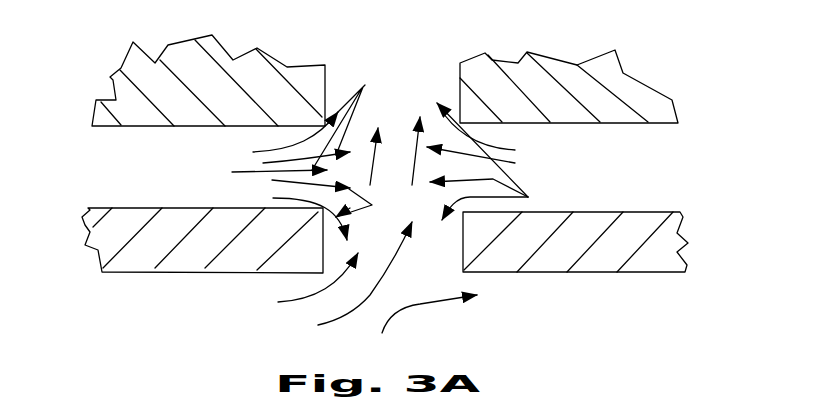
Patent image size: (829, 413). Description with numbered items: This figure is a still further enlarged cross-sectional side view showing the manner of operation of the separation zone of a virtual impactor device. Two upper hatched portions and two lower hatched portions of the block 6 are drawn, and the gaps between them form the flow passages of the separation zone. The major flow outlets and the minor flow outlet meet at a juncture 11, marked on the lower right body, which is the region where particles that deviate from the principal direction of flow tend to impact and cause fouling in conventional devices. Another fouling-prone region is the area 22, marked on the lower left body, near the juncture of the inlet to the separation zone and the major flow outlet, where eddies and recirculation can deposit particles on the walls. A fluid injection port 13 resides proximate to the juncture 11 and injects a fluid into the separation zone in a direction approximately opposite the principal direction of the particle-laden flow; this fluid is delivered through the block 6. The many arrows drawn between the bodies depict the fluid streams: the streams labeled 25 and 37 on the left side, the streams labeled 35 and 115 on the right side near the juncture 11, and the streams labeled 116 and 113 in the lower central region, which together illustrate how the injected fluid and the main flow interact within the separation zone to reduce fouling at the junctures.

The block 6 is at (220, 93).
The juncture 11 is at (464, 271).
The fluid injection port 13 is at (543, 168).
The area 22 is at (321, 268).
The flow channel gap 25 is at (222, 175).
The flow stream 35 is at (452, 118).
The flow stream 37 is at (337, 141).
The cross flow stream 113 is at (428, 303).
The flow stream 115 is at (422, 126).
The flow stream 116 is at (383, 128).